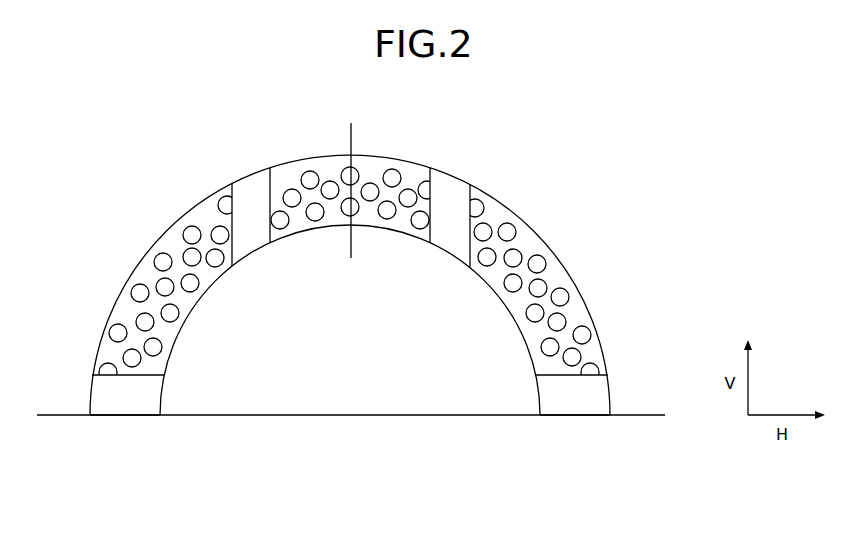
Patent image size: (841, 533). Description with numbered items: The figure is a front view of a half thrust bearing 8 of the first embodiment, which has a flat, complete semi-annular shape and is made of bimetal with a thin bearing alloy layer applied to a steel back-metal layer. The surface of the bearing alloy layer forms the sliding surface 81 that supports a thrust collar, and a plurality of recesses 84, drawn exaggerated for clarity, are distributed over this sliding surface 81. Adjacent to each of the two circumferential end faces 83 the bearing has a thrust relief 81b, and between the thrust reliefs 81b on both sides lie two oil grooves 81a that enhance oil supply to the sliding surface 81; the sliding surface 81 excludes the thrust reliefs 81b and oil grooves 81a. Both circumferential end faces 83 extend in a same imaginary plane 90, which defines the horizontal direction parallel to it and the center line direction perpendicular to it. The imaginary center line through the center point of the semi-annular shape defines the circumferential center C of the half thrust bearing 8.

The half thrust bearing 8 is at (587, 158).
The sliding surface 81 is at (555, 273).
The oil grooves 81a is at (252, 183).
The thrust reliefs 81b is at (113, 402).
The circumferential end faces 83 is at (125, 417).
The recesses 84 is at (193, 228).
The imaginary plane 90 is at (303, 417).
The circumferential center C is at (353, 140).